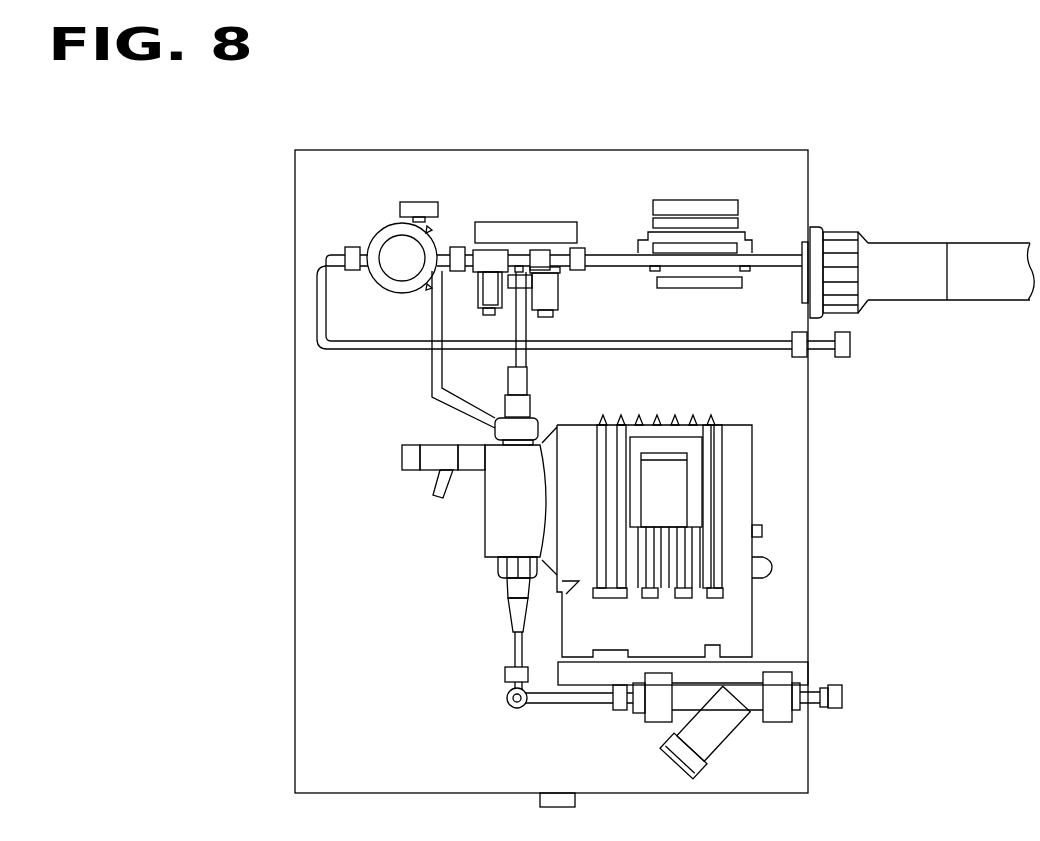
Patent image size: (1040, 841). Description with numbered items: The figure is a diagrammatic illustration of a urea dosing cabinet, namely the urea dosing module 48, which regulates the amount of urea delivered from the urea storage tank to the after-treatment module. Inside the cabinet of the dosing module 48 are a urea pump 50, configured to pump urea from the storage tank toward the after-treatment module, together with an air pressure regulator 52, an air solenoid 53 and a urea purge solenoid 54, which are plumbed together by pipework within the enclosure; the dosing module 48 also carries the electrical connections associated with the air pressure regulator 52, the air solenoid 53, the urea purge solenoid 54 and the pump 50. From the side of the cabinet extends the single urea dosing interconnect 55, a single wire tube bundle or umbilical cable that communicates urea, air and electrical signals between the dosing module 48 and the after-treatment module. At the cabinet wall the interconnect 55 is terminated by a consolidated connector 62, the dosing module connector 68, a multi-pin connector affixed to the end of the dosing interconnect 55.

The urea dosing module 48 is at (280, 358).
The urea pump 50 is at (752, 498).
The air pressure regulator 52 is at (380, 234).
The air solenoid 53 is at (562, 298).
The urea purge solenoid 54 is at (477, 286).
The urea dosing interconnect 55 is at (980, 243).
The consolidated connector 62 is at (843, 187).
The dosing module connector 68 is at (898, 243).